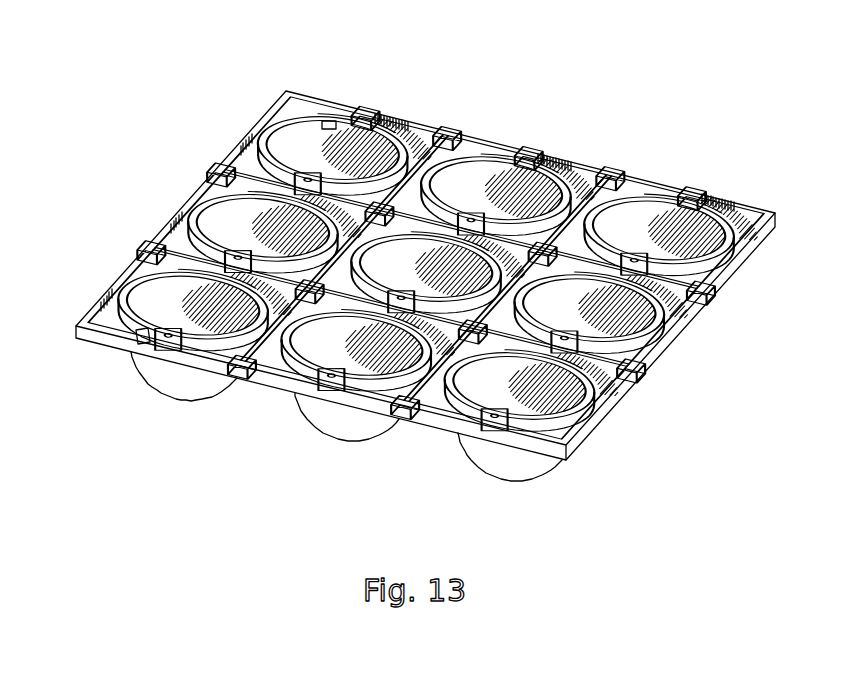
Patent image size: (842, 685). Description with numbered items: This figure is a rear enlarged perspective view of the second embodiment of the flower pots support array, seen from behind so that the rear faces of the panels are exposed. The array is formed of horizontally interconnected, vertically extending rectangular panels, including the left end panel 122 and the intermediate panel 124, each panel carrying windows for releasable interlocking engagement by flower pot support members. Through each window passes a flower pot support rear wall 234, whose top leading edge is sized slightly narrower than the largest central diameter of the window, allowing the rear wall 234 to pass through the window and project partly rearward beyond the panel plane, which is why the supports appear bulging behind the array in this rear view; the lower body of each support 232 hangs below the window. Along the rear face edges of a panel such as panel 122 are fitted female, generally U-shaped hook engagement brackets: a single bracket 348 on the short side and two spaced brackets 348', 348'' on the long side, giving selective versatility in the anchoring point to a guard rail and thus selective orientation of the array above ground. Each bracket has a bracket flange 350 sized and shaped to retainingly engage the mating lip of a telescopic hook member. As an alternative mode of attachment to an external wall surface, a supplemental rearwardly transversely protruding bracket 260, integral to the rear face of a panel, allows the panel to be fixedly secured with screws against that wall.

The left end panel 122 is at (405, 148).
The intermediate panel 124 is at (573, 185).
The cup holder body 232 is at (163, 373).
The flower pot support rear wall 234 is at (478, 200).
The supplemental rearwardly transversely protruding bracket 260 is at (133, 328).
The female U-shape hook engagement bracket 348 is at (401, 69).
The female U-shape hook engagement bracket 348' is at (166, 139).
The female U-shape hook engagement bracket 348'' is at (96, 217).
The bracket flange 350 is at (320, 116).